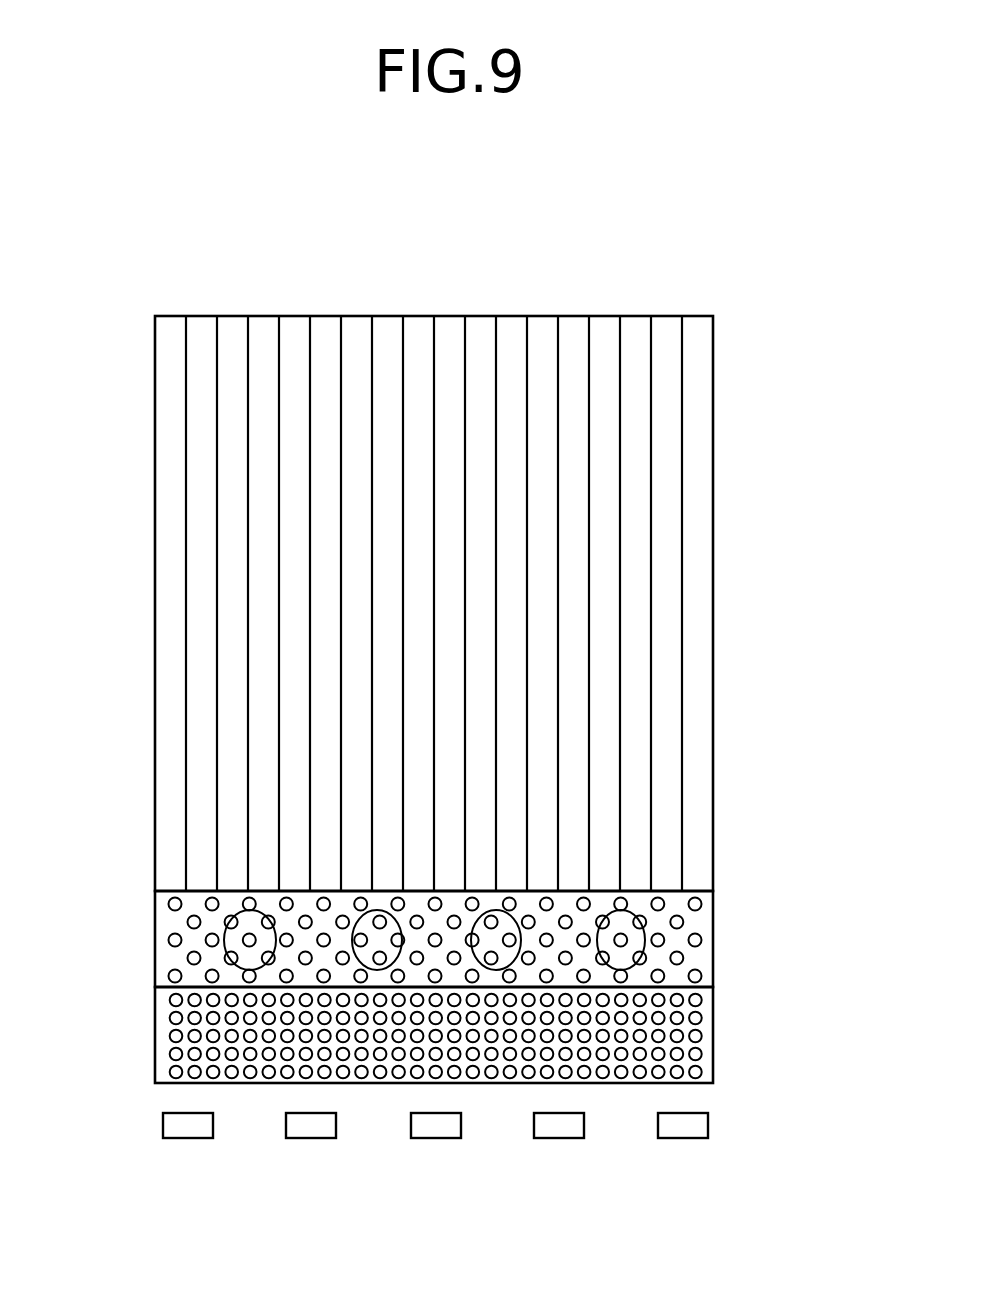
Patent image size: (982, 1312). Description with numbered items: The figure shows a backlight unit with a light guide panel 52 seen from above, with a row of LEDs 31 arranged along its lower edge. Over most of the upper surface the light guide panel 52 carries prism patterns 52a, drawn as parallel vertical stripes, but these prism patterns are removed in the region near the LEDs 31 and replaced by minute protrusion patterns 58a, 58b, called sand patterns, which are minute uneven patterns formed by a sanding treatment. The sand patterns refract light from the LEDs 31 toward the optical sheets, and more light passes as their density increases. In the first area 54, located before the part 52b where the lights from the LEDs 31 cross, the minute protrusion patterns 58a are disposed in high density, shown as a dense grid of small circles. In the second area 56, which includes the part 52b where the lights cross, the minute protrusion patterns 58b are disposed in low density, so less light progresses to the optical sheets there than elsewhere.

The light guide panel 52 is at (713, 405).
The prism patterns 52a is at (698, 608).
The part where the lights from the LEDs cross 52b is at (605, 915).
The second area 56 is at (708, 945).
The minute protrusion patterns 58b is at (173, 940).
The first area 54 is at (708, 1040).
The minute protrusion patterns 58a is at (173, 1036).
The LEDs 31 is at (187, 1139).